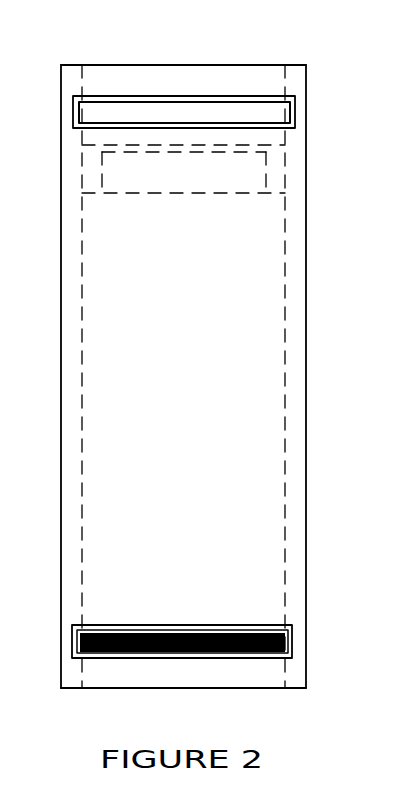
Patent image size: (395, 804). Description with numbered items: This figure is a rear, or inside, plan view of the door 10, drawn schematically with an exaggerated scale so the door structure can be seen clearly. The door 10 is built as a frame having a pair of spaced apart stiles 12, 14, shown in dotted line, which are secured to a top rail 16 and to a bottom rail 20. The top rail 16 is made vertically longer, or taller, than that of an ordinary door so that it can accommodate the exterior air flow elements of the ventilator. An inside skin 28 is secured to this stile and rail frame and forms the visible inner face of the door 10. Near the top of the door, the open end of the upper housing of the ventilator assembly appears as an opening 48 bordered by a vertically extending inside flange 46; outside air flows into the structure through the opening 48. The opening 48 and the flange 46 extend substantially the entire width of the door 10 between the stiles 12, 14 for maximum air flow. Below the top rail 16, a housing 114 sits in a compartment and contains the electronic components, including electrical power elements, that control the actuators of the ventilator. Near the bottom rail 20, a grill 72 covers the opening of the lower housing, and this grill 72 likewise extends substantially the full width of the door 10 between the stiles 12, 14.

The door 10 is at (257, 56).
The stile 12 is at (72, 191).
The stile 14 is at (297, 191).
The top rail 16 is at (96, 70).
The bottom rail 20 is at (133, 682).
The inside skin 28 is at (263, 250).
The inside flange 46 is at (105, 127).
The opening 48 is at (259, 126).
The grill 72 is at (218, 625).
The housing 114 is at (242, 173).